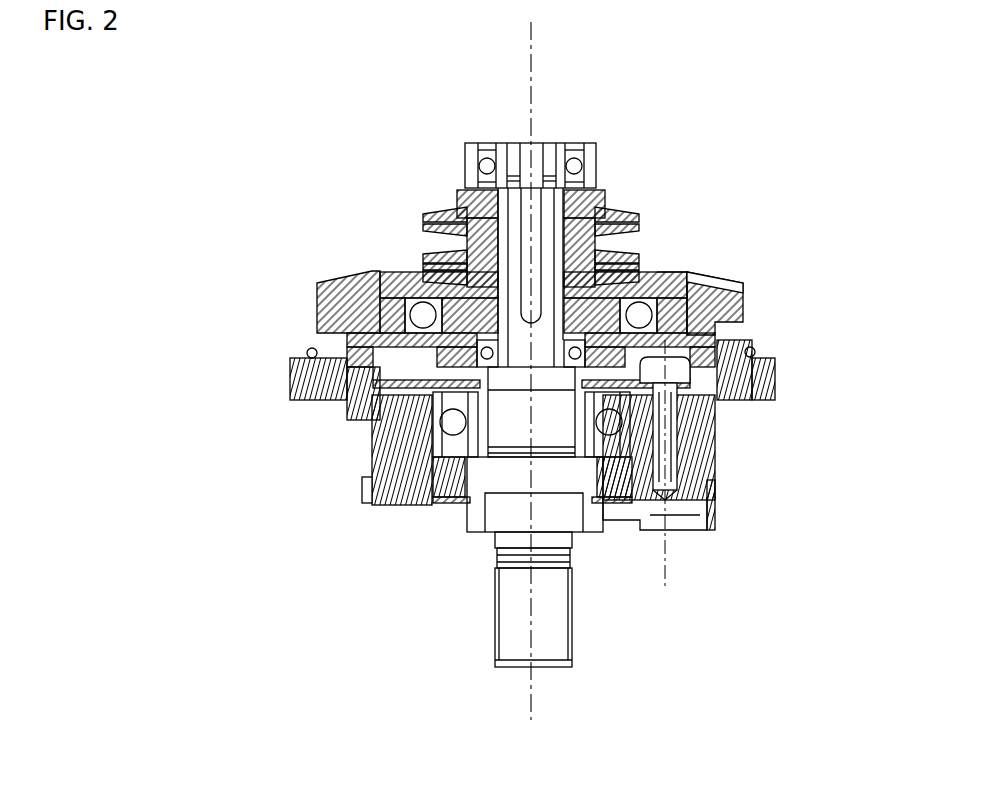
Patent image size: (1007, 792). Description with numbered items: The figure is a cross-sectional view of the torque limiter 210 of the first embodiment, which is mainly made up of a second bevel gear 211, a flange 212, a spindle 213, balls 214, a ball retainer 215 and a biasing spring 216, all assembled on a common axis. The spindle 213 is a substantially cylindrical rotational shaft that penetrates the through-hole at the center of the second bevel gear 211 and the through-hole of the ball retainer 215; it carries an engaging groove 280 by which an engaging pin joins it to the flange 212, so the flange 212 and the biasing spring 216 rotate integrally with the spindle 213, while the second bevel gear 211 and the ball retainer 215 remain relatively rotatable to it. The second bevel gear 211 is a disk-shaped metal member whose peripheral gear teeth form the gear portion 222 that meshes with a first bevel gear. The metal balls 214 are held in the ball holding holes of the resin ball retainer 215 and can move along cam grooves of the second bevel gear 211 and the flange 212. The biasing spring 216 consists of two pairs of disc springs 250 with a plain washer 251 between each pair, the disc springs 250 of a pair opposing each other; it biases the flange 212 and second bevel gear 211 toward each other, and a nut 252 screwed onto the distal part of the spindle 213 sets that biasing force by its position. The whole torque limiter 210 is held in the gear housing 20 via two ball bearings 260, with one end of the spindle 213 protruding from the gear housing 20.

The gear housing 20 is at (312, 400).
The torque limiter 210 is at (558, 100).
The second bevel gear 211 is at (584, 222).
The flange 212 is at (677, 279).
The spindle 213 is at (498, 470).
The ball 214 is at (641, 303).
The ball retainer 215 is at (670, 266).
The biasing spring 216 is at (399, 159).
The gear portion 222 is at (727, 273).
The disc spring 250 is at (423, 216).
The plain washer 251 is at (423, 228).
The nut 252 is at (462, 192).
The ball bearing 260 is at (507, 143).
The engaging groove 280 is at (533, 290).